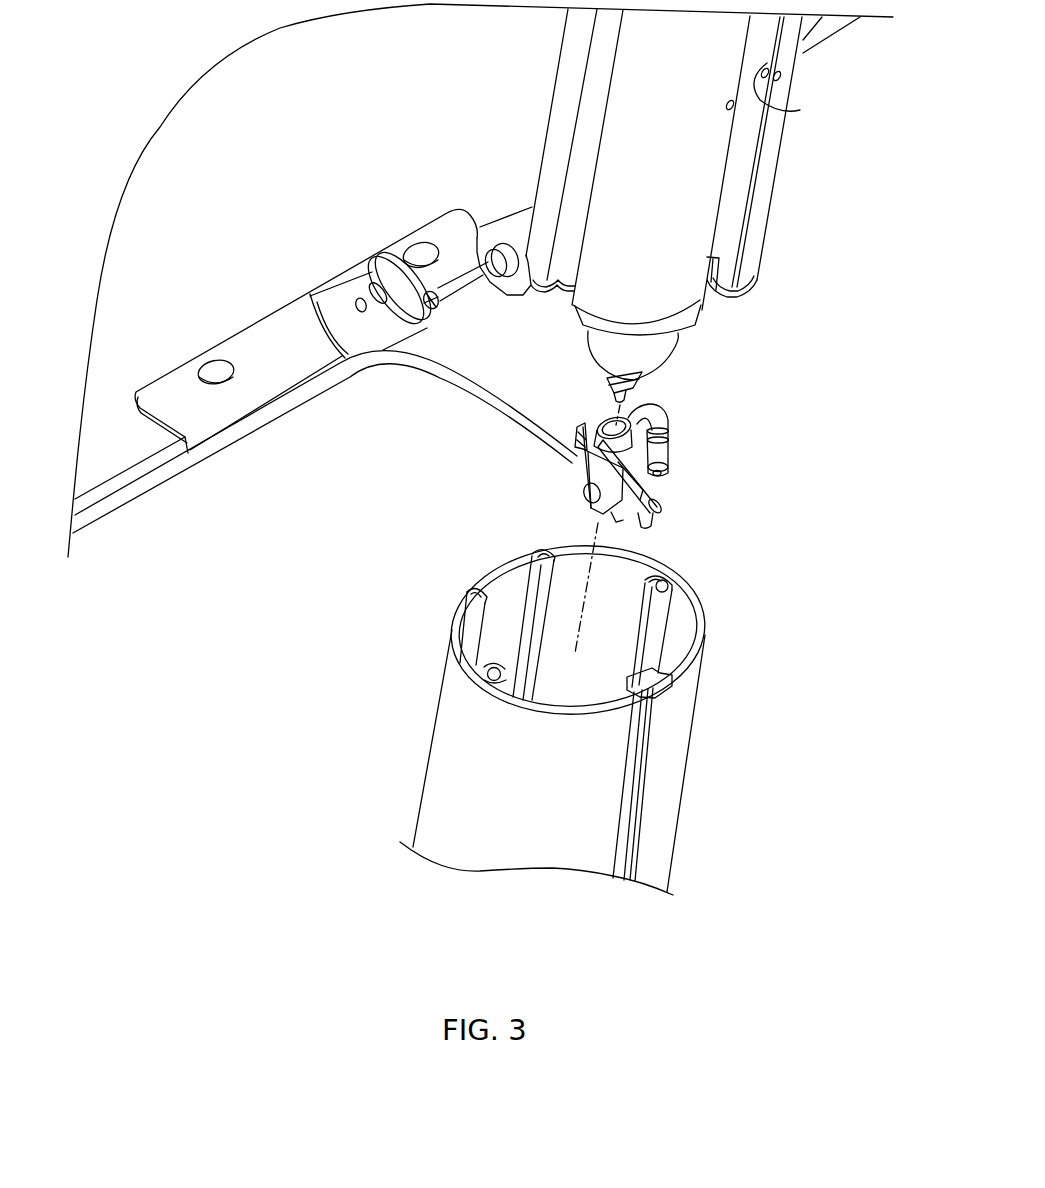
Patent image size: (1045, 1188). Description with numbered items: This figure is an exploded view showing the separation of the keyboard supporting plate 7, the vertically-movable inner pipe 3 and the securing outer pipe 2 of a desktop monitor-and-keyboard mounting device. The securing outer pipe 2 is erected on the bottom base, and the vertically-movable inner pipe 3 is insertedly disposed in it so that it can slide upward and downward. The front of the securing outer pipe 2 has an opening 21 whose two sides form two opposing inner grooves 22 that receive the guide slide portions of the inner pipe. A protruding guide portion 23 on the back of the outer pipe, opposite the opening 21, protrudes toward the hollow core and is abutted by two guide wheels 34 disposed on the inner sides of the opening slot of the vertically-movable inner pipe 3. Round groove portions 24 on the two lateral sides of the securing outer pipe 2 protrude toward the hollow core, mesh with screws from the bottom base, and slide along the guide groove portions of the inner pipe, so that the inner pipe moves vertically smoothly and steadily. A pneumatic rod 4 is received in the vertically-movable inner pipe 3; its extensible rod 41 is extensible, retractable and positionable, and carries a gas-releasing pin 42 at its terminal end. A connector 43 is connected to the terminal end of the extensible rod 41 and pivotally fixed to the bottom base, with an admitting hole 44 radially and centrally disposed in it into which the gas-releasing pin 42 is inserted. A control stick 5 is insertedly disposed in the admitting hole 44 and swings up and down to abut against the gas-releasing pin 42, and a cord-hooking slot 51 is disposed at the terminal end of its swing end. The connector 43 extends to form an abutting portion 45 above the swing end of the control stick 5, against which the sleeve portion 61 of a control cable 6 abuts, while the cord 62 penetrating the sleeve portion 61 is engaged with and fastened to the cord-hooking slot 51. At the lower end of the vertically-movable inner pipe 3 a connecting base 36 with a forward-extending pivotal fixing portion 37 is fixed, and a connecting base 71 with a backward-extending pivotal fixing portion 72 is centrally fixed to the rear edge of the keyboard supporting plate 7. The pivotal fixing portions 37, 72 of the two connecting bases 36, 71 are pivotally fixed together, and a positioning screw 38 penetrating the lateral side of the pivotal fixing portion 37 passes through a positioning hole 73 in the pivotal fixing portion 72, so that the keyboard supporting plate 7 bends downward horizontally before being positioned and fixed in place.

The securing outer pipe 2 is at (663, 792).
The opening 21 is at (498, 582).
The inner grooves 22 is at (543, 548).
The protruding guide portion 23 is at (653, 688).
The round groove portions 24 is at (494, 666).
The vertically-movable inner pipe 3 is at (695, 148).
The guide wheels 34 is at (763, 100).
The connecting base 36 is at (692, 330).
The pivotal fixing portion 37 is at (500, 221).
The positioning screw 38 is at (448, 297).
The pneumatic rod 4 is at (657, 347).
The extensible rod 41 is at (643, 388).
The gas-releasing pin 42 is at (610, 387).
The control stick 5 is at (581, 422).
The cord-hooking slot 51 is at (661, 503).
The control cable 6 is at (248, 425).
The sleeve portion 61 is at (669, 438).
The cord 62 is at (657, 490).
The keyboard supporting plate 7 is at (105, 455).
The connecting base 71 is at (245, 337).
The pivotal fixing portion 72 is at (373, 272).
The positioning hole 73 is at (356, 306).
The connector 43 is at (583, 481).
The admitting hole 44 is at (618, 519).
The abutting portion 45 is at (665, 468).